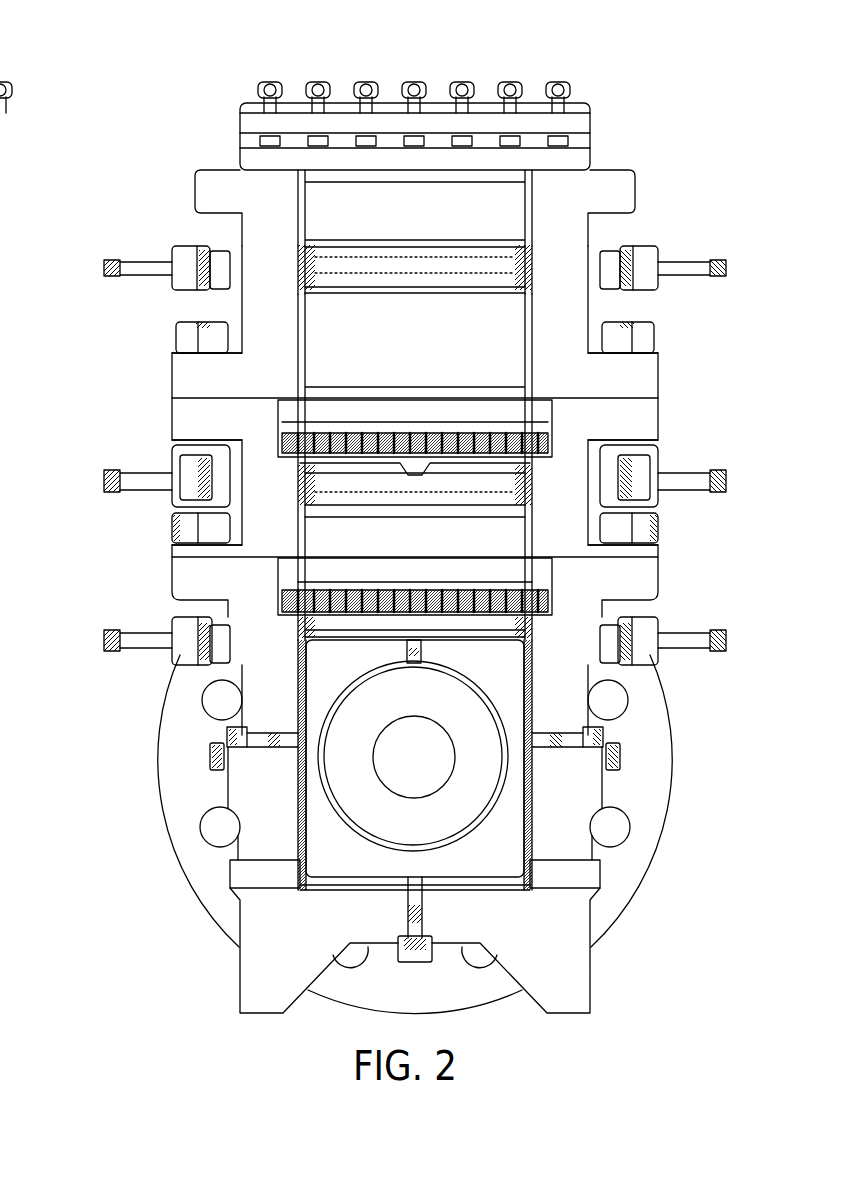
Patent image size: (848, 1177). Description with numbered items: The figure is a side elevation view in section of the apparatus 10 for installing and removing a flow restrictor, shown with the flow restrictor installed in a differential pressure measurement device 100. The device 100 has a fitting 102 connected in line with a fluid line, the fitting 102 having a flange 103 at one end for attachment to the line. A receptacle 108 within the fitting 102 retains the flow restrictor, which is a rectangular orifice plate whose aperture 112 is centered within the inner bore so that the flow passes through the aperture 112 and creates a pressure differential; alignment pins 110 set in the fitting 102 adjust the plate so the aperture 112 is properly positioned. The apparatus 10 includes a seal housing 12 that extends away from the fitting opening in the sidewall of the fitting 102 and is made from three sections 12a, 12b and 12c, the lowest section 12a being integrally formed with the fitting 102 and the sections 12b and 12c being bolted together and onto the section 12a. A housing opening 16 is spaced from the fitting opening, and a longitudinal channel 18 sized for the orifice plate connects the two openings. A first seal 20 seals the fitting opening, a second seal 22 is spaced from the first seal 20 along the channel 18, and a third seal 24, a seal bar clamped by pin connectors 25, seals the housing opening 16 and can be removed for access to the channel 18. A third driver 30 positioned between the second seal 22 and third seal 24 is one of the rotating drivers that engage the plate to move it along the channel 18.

The apparatus 10 is at (692, 96).
The seal housing 12 is at (635, 372).
The seal housing section 12a is at (637, 566).
The seal housing section 12b is at (200, 426).
The seal housing section 12c is at (620, 186).
The housing opening 16 is at (300, 172).
The channel 18 is at (430, 332).
The first seal 20 is at (545, 592).
The second seal 22 is at (530, 433).
The third seal 24 is at (257, 157).
The pin connectors 25 is at (508, 85).
The third driver 30 is at (333, 262).
The differential pressure measurement device 100 is at (626, 931).
The fitting 102 is at (268, 833).
The flange 103 is at (167, 763).
The receptacle 108 is at (323, 837).
The alignment pins 110 is at (215, 737).
The aperture 112 is at (423, 757).